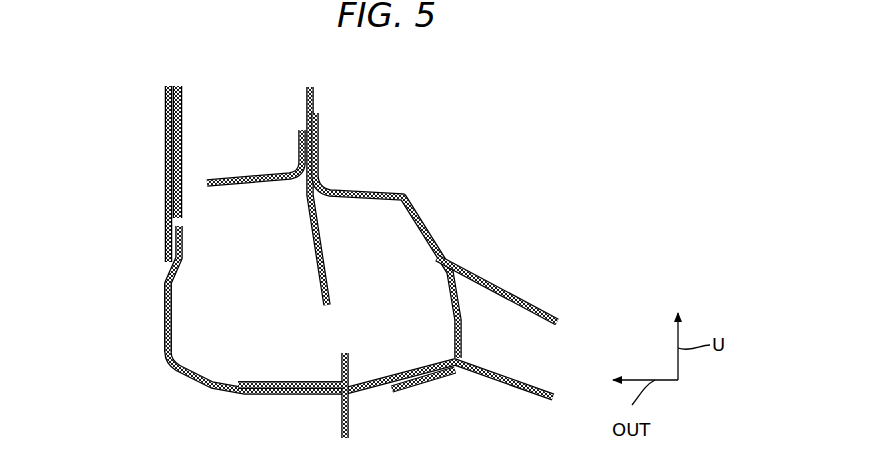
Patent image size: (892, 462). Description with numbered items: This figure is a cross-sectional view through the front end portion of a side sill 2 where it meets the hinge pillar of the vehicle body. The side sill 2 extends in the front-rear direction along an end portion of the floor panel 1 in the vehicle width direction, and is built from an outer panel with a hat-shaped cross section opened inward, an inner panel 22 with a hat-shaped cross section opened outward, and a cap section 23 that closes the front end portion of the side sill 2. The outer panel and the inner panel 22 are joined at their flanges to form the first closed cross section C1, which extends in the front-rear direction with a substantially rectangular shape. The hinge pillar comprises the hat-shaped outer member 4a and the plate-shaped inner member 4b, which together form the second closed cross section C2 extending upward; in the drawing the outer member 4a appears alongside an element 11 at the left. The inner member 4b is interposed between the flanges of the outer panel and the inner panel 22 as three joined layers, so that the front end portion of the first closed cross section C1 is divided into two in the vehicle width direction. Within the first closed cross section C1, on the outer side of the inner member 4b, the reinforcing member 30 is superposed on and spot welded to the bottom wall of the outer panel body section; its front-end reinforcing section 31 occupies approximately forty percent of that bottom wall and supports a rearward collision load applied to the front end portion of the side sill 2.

The floor panel 1 is at (537, 313).
The side sill 2 is at (197, 386).
The outer member 4a is at (165, 134).
The inner member 4b is at (318, 232).
The outer panel 11 is at (182, 108).
The inner panel 22 is at (408, 192).
The cap section 23 is at (165, 295).
The reinforcing member 30 is at (252, 381).
The front-end reinforcing section 31 is at (252, 381).
The first closed cross section C1 is at (262, 258).
The second closed cross section C2 is at (262, 155).